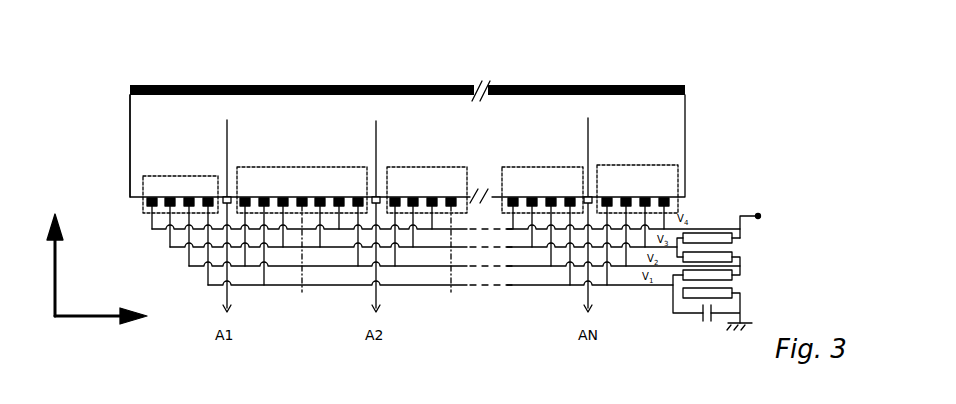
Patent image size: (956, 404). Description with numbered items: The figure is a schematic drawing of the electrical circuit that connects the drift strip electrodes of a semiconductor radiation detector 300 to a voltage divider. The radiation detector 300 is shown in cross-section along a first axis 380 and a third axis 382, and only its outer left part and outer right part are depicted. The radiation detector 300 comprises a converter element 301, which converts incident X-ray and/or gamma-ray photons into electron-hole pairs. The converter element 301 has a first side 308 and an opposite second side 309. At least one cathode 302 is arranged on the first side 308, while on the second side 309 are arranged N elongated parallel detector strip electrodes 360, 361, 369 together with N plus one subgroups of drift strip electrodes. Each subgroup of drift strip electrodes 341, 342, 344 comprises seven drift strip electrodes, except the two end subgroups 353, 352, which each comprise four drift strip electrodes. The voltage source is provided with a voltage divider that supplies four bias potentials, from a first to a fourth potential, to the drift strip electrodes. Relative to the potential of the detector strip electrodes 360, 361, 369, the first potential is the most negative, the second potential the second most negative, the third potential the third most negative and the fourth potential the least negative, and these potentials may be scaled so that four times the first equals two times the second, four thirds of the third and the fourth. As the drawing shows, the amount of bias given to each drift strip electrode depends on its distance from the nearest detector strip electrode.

The semiconductor radiation detector 300 is at (469, 114).
The converter element 301 is at (130, 120).
The cathode 302 is at (372, 85).
The first side 308 is at (418, 68).
The second side 309 is at (718, 283).
The subgroup of drift strip electrodes 341 is at (245, 167).
The subgroup of drift strip electrodes 342 is at (402, 167).
The subgroup of drift strip electrodes 344 is at (527, 167).
The end subgroup of drift strip electrodes 352 is at (626, 165).
The end subgroup of drift strip electrodes 353 is at (166, 176).
The detector strip electrode 360 is at (227, 120).
The detector strip electrode 361 is at (376, 121).
The detector strip electrode 369 is at (588, 118).
The first axis 380 is at (118, 322).
The third axis 382 is at (58, 254).